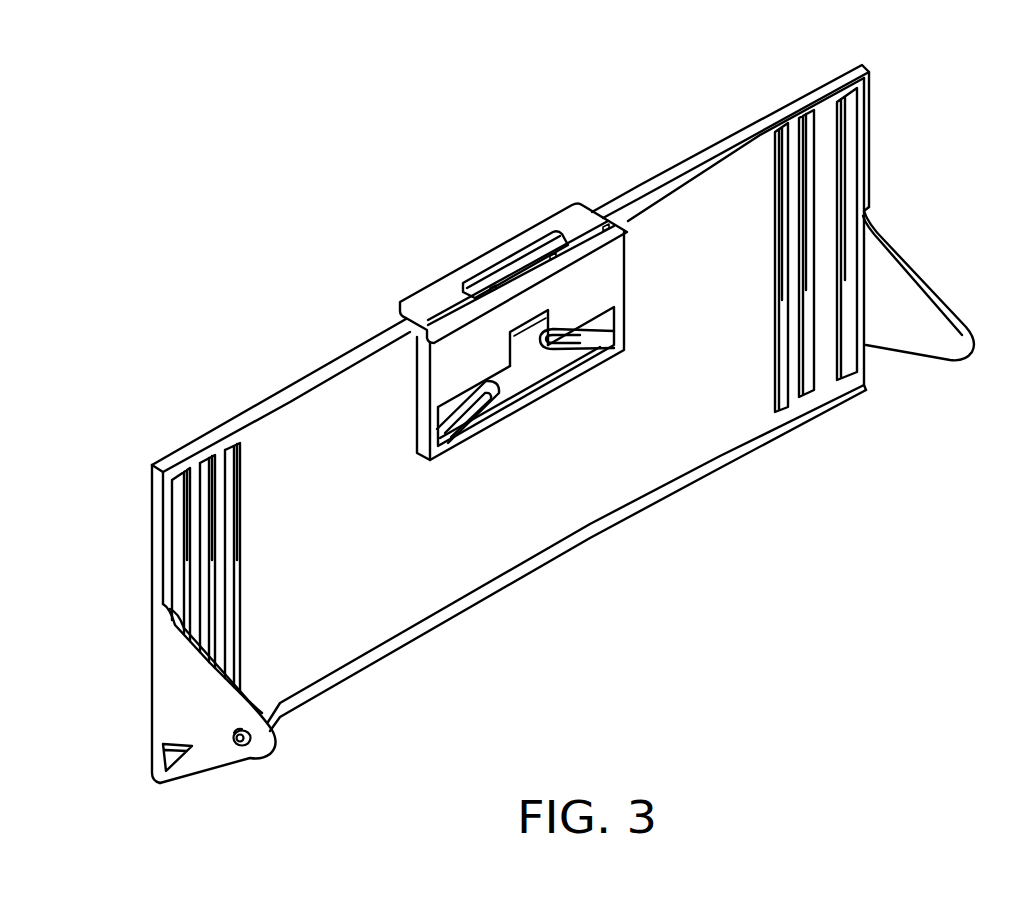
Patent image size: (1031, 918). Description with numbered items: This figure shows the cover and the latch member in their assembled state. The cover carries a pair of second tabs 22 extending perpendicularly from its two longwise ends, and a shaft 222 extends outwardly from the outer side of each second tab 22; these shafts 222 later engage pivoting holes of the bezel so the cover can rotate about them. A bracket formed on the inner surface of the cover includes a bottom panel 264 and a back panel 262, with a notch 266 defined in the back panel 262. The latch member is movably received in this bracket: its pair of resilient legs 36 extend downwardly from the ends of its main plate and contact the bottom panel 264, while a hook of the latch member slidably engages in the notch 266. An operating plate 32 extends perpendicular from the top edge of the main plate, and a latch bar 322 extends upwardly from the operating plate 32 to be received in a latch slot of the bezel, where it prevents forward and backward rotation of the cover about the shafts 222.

The second tab 22 is at (182, 703).
The shaft 222 is at (253, 748).
The operating plate 32 is at (438, 298).
The latch bar 322 is at (517, 270).
The back panel 262 is at (603, 283).
The bottom panel 264 is at (520, 347).
The notch 266 is at (513, 397).
The resilient leg 36 is at (462, 417).